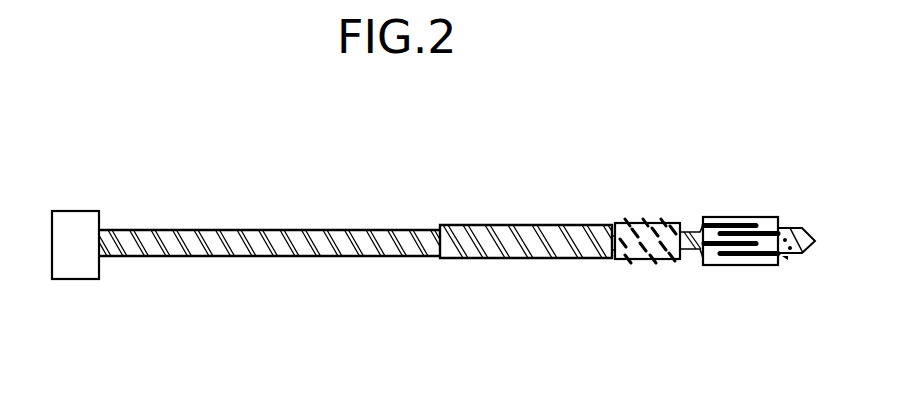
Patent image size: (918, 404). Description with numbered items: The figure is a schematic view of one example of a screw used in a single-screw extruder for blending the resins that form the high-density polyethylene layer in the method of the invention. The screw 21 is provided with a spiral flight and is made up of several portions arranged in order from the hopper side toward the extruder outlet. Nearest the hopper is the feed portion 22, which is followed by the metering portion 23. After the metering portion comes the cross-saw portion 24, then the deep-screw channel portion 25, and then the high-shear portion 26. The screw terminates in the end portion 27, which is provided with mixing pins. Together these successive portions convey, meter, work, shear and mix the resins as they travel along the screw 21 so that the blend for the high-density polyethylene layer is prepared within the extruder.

The screw 21 is at (236, 223).
The feed portion 22 is at (430, 277).
The metering portion 23 is at (607, 285).
The cross-saw portion 24 is at (678, 290).
The deep-screw channel portion 25 is at (690, 230).
The high-shear portion 26 is at (780, 288).
The end portion 27 is at (793, 224).